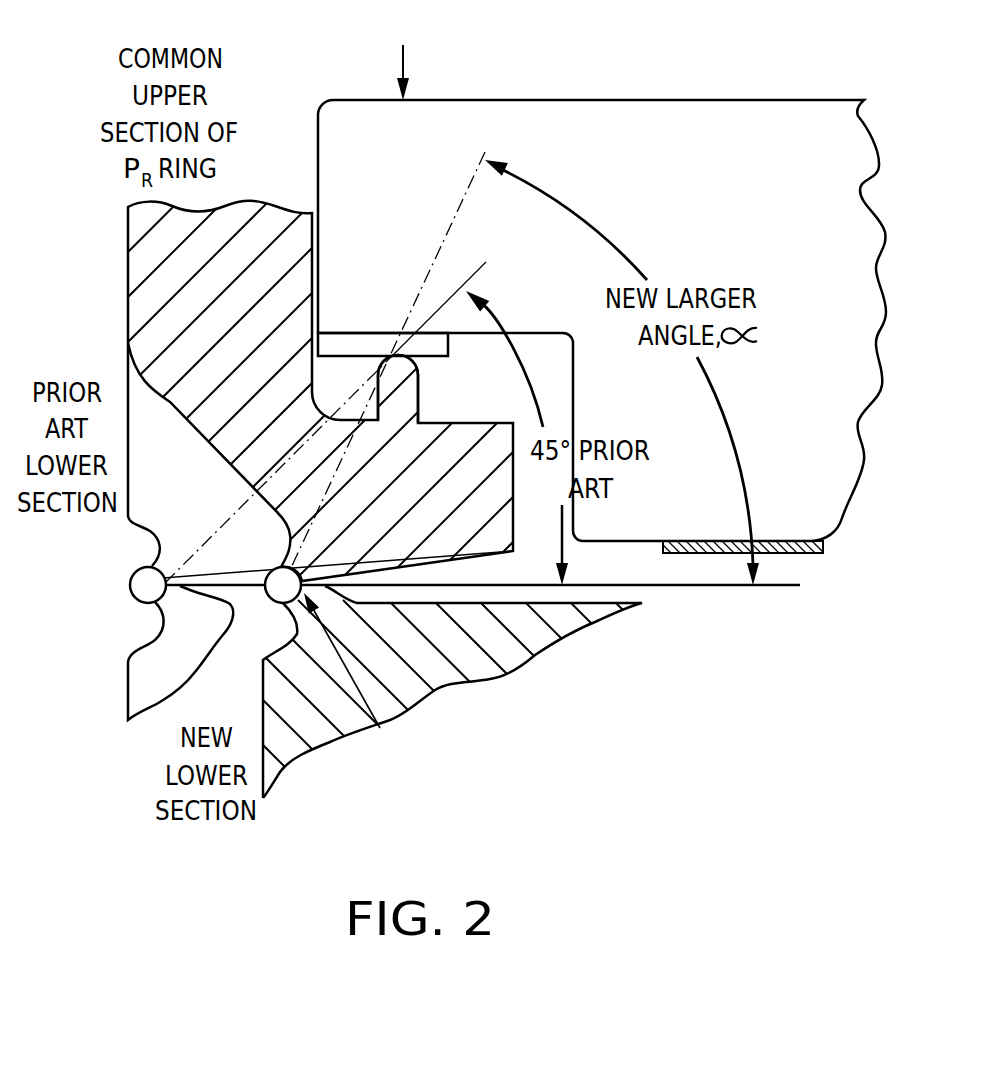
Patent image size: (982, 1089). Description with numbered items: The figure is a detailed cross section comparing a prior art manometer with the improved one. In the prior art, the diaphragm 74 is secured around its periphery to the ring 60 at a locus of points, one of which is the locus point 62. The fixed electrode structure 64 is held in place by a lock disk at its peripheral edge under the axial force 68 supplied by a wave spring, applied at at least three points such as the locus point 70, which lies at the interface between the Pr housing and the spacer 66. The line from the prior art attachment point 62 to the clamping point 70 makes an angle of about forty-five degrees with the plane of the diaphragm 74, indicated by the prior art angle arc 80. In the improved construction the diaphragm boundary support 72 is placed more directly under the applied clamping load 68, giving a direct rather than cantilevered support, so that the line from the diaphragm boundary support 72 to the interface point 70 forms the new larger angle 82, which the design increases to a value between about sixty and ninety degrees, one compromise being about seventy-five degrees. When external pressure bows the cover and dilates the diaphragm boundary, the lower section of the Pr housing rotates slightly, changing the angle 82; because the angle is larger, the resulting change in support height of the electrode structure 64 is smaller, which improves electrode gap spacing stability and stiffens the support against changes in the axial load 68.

The ring 60 is at (250, 185).
The locus point 62 is at (173, 600).
The fixed electrode structure 64 is at (583, 309).
The spacer 66 is at (344, 310).
The axial force 68 is at (483, 55).
The locus point 70 is at (386, 330).
The diaphragm boundary support 72 is at (387, 720).
The diaphragm 74 is at (661, 605).
The 45 degree prior art contact angle 80 is at (552, 392).
The angle α 82 is at (738, 395).